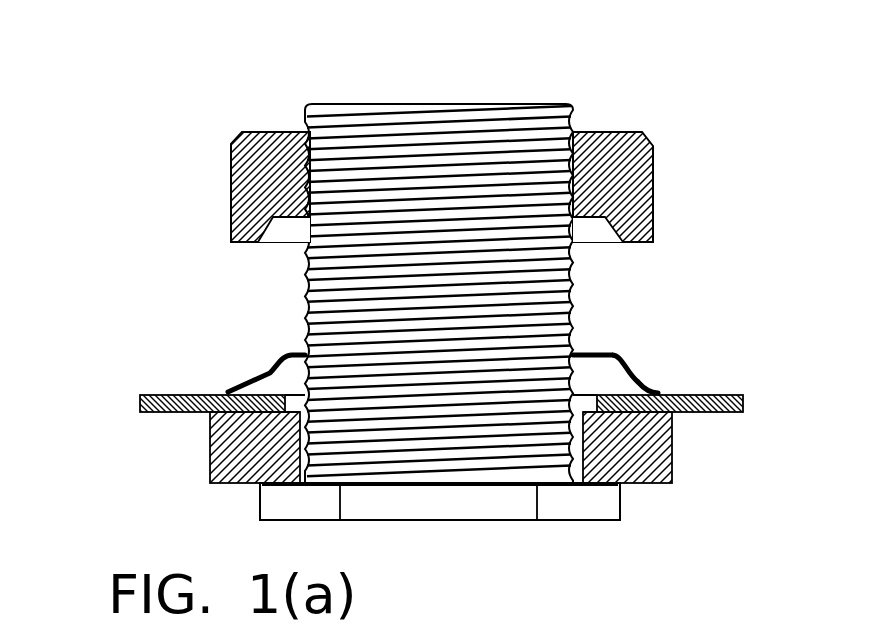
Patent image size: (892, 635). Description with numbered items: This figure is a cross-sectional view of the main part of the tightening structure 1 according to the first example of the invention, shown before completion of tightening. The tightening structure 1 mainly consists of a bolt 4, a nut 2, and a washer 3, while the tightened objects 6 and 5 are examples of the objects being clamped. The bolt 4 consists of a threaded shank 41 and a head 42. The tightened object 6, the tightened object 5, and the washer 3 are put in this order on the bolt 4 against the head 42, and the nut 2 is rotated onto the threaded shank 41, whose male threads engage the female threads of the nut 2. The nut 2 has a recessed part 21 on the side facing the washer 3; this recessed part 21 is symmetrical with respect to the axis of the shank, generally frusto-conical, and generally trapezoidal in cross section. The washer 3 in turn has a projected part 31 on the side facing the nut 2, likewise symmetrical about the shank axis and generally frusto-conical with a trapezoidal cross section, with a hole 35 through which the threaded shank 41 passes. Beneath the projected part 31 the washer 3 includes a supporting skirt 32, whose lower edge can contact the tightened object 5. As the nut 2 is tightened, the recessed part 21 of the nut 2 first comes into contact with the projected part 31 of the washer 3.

The tightening structure 1 is at (478, 74).
The nut 2 is at (653, 170).
The recessed part 21 is at (590, 232).
The washer 3 is at (757, 277).
The projected part 31 is at (625, 367).
The supporting skirt 32 is at (657, 387).
The hole 35 is at (573, 350).
The bolt 4 is at (140, 147).
The threaded shank 41 is at (340, 102).
The head 42 is at (262, 505).
The tightened object 5 is at (708, 413).
The tightened object 6 is at (672, 468).